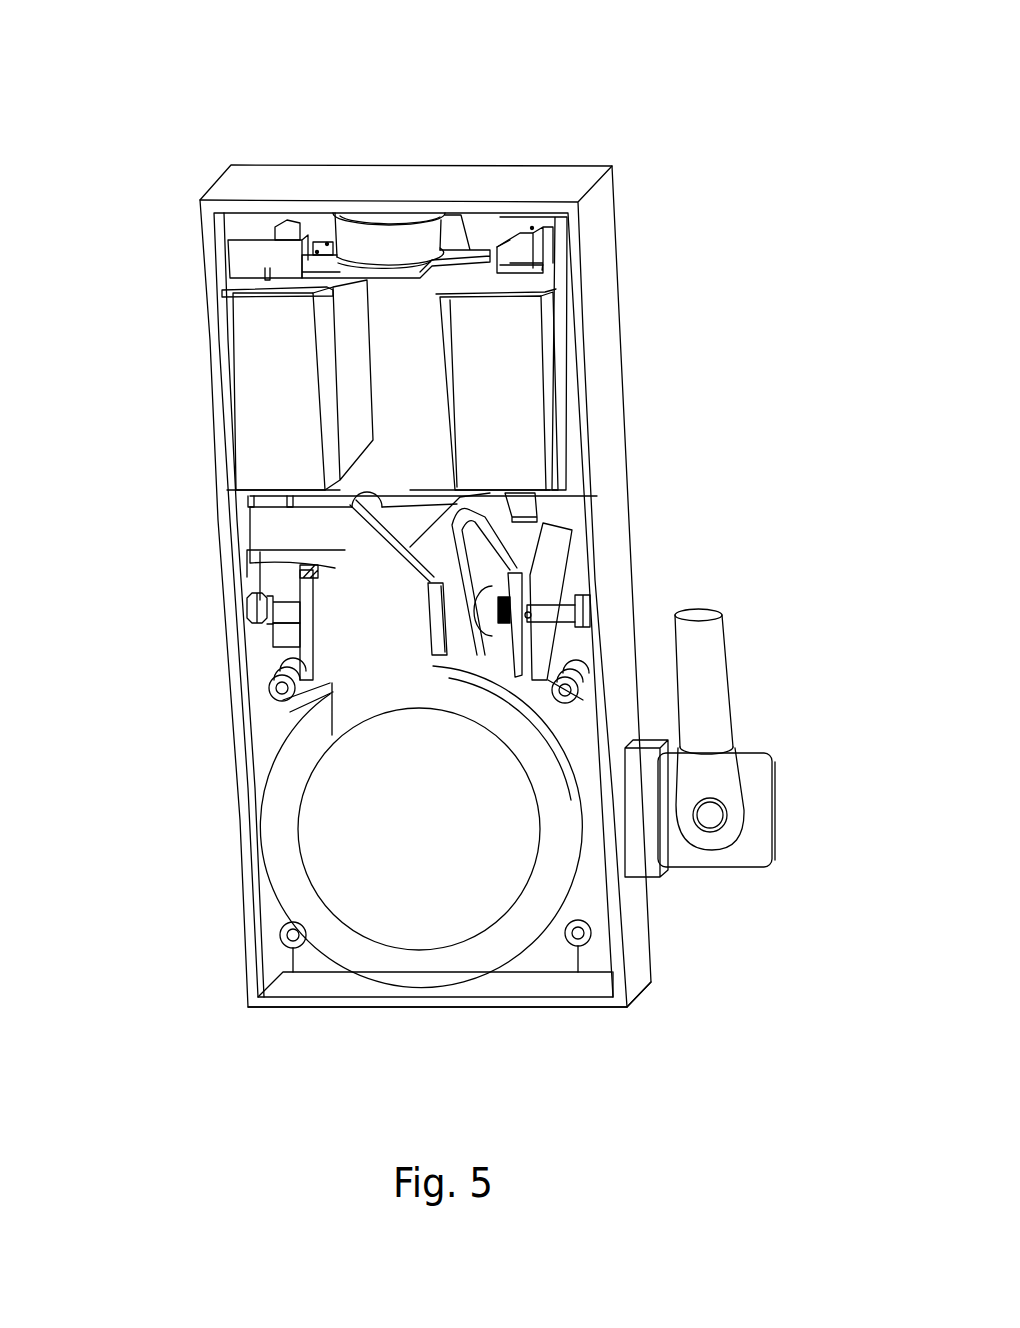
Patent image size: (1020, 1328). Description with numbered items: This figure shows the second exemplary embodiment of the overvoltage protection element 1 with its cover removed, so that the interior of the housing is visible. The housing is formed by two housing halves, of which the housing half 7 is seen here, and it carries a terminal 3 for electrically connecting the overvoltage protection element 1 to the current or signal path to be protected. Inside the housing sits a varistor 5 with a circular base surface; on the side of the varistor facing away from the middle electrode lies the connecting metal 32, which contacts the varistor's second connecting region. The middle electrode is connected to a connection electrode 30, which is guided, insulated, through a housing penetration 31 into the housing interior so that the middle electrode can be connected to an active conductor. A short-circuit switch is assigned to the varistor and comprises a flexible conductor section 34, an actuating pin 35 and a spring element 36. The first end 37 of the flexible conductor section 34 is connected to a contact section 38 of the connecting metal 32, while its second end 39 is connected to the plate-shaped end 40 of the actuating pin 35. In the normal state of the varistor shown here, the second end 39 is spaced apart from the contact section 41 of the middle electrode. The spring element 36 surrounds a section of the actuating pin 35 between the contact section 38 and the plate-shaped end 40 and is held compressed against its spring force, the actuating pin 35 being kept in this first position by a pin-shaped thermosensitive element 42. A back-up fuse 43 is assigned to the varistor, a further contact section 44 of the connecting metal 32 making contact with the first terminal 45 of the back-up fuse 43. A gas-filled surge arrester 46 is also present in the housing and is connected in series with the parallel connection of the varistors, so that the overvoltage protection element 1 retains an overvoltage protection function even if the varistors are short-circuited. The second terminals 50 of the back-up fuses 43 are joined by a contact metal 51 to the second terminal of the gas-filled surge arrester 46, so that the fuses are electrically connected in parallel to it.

The overvoltage protection element 1 is at (203, 135).
The terminal 3 is at (443, 190).
The varistor 5 is at (377, 962).
The housing half 7 is at (600, 1012).
The connection electrode 30 is at (745, 845).
The housing penetration 31 is at (655, 860).
The connecting metal 32 is at (421, 827).
The flexible conductor section 34 is at (540, 548).
The actuating pin 35 is at (283, 613).
The spring element 36 is at (512, 597).
The first end 37 is at (533, 580).
The contact section 38 is at (530, 648).
The second end 39 is at (430, 580).
The end of the actuating pin 40 is at (318, 696).
The contact section 41 is at (305, 576).
The thermosensitive element 42 is at (527, 618).
The back-up fuse 43 is at (263, 388).
The contact section 44 is at (273, 503).
The first terminal 45 is at (520, 500).
The gas-filled surge arrester 46 is at (360, 240).
The second terminal 50 is at (510, 227).
The contact metal 51 is at (470, 248).